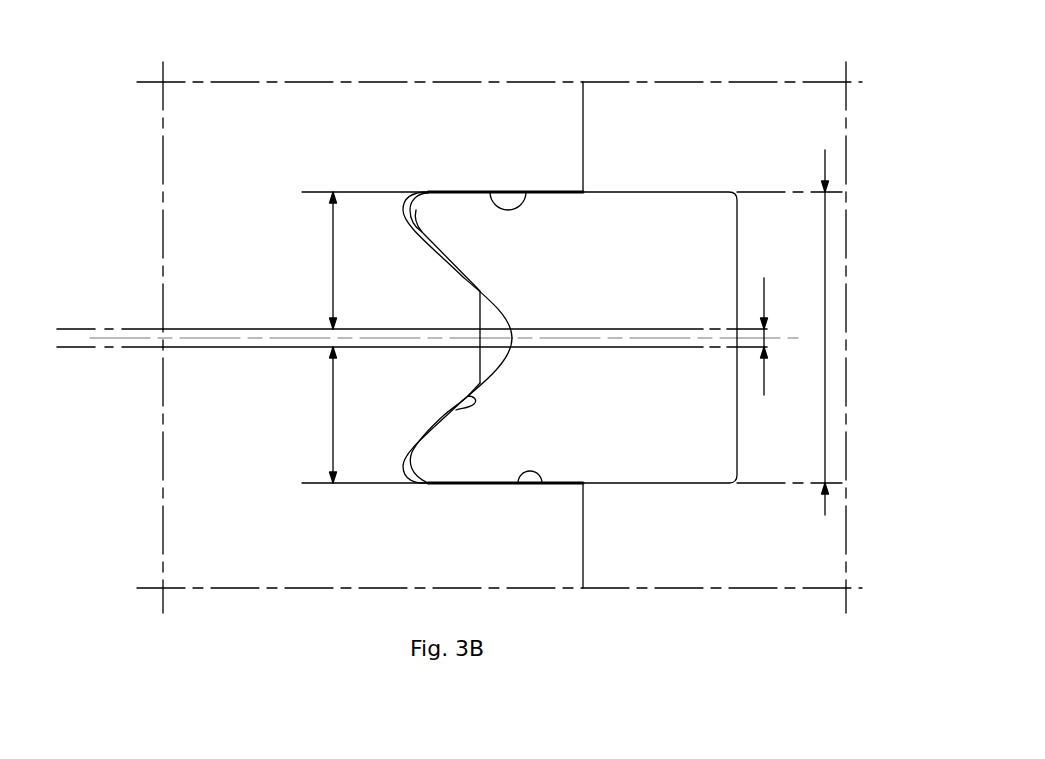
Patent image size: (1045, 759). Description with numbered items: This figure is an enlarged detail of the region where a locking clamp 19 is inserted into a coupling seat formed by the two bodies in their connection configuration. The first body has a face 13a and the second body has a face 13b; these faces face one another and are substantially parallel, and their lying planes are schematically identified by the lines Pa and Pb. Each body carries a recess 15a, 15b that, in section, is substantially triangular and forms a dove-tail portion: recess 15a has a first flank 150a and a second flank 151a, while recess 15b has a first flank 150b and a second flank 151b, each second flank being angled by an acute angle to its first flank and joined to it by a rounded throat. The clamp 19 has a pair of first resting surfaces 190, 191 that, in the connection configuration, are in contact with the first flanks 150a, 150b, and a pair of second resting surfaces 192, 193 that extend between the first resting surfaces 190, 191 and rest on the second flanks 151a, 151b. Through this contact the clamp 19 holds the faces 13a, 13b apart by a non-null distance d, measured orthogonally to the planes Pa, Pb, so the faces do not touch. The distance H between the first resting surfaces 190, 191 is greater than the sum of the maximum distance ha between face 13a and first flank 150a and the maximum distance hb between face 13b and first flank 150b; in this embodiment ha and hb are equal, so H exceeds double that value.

The locking clamp 19 is at (713, 242).
The first resting surface 190 is at (560, 192).
The first resting surface 191 is at (565, 483).
The second resting surface 192 is at (450, 253).
The second resting surface 193 is at (462, 410).
The recess 15a is at (412, 196).
The recess 15b is at (425, 440).
The second flank 151a is at (422, 232).
The second flank 151b is at (468, 400).
The first flank 150a is at (527, 192).
The first flank 150b is at (540, 483).
The face 13a is at (197, 328).
The face 13b is at (172, 347).
The lying plane Pa is at (93, 328).
The lying plane Pb is at (88, 348).
The maximum distance ha is at (333, 281).
The maximum distance hb is at (333, 388).
The distance H is at (826, 383).
The distance d is at (765, 378).